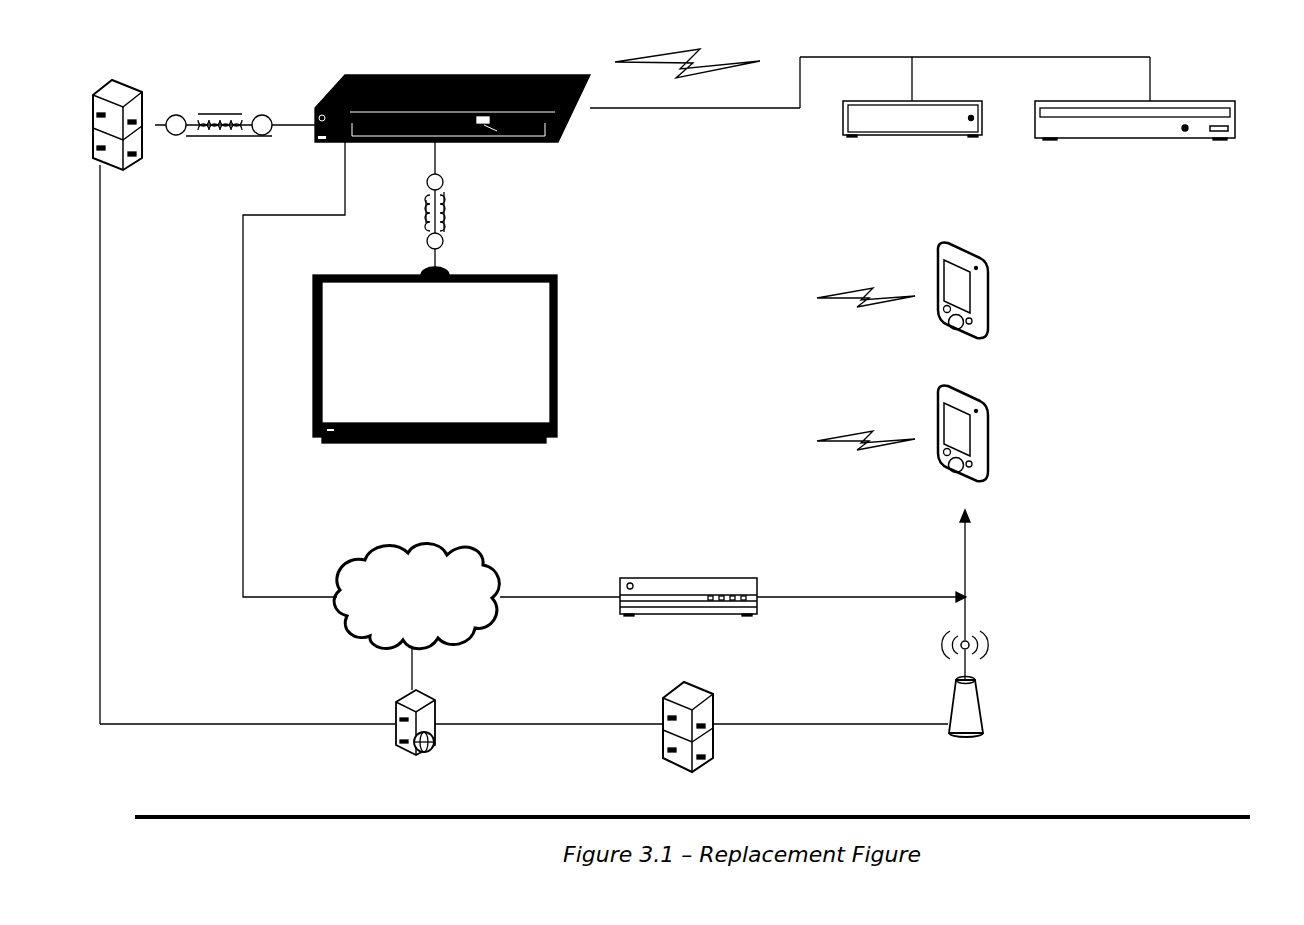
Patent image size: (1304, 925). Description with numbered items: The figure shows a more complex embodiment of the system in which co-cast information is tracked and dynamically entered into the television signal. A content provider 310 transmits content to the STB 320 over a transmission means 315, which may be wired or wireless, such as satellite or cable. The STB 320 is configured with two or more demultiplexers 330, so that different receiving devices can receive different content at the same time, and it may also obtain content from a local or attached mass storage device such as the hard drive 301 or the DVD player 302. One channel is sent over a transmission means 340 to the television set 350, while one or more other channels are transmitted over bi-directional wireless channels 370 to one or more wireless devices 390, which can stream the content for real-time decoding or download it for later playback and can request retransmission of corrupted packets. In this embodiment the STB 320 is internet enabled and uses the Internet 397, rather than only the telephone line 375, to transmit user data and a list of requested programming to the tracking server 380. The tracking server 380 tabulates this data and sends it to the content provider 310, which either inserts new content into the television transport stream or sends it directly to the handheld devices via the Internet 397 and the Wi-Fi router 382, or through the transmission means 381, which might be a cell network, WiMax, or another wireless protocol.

The hard drive 301 is at (915, 120).
The DVD player 302 is at (1135, 120).
The content provider 310 is at (422, 413).
The transmission means 315 is at (219, 113).
The STB 320 is at (407, 68).
The demultiplexers 330 is at (503, 141).
The transmission means 340 is at (450, 211).
The television set 350 is at (568, 355).
The bi-directional wireless channels 370 is at (765, 232).
The telephone line 375 is at (294, 369).
The tracking server 380 is at (402, 723).
The transmission means 381 is at (992, 702).
The Wi-Fi router 382 is at (694, 566).
The wireless devices 390 is at (963, 373).
The Internet 397 is at (416, 595).